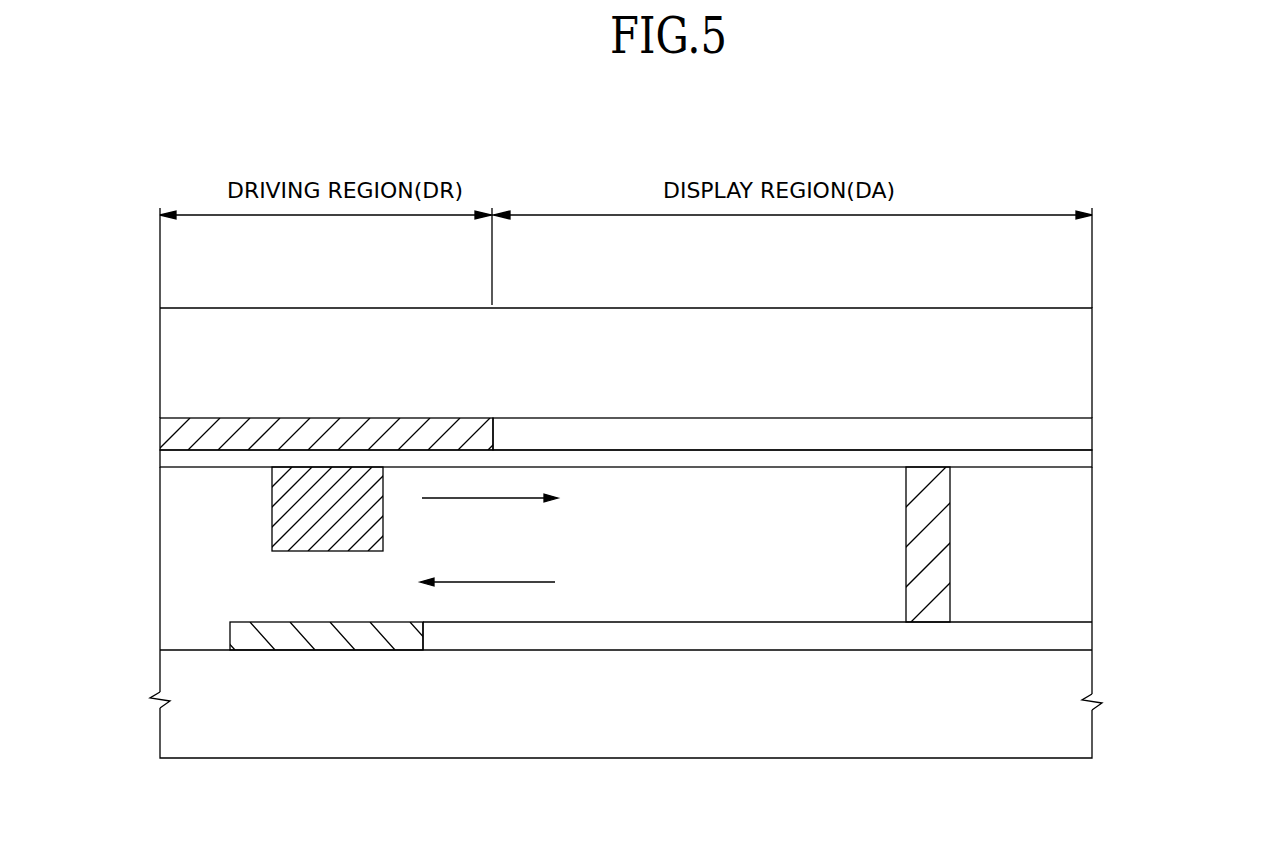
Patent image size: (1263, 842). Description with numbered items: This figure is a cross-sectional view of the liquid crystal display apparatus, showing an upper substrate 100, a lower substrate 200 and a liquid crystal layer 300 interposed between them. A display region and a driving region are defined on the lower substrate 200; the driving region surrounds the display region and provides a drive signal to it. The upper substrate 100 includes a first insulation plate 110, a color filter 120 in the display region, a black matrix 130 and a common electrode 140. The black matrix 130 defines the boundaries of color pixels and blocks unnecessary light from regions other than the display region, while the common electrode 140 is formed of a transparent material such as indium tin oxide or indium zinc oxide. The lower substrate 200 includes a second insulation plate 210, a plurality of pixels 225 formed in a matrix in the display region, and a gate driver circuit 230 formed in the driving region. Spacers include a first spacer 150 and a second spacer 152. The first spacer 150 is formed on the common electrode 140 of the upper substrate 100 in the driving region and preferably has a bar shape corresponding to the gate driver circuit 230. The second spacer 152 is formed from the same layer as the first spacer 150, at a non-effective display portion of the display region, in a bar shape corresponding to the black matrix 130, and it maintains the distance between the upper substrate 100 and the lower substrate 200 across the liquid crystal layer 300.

The upper substrate 100 is at (679, 351).
The first insulation plate 110 is at (774, 333).
The color filter 120 is at (541, 435).
The black matrix 130 is at (443, 435).
The common electrode 140 is at (637, 462).
The first spacer 150 is at (326, 495).
The second spacer 152 is at (925, 495).
The lower substrate 200 is at (690, 728).
The second insulation plate 210 is at (655, 740).
The pixels 225 is at (522, 637).
The gate driver circuit 230 is at (387, 640).
The liquid crystal layer 300 is at (1077, 548).